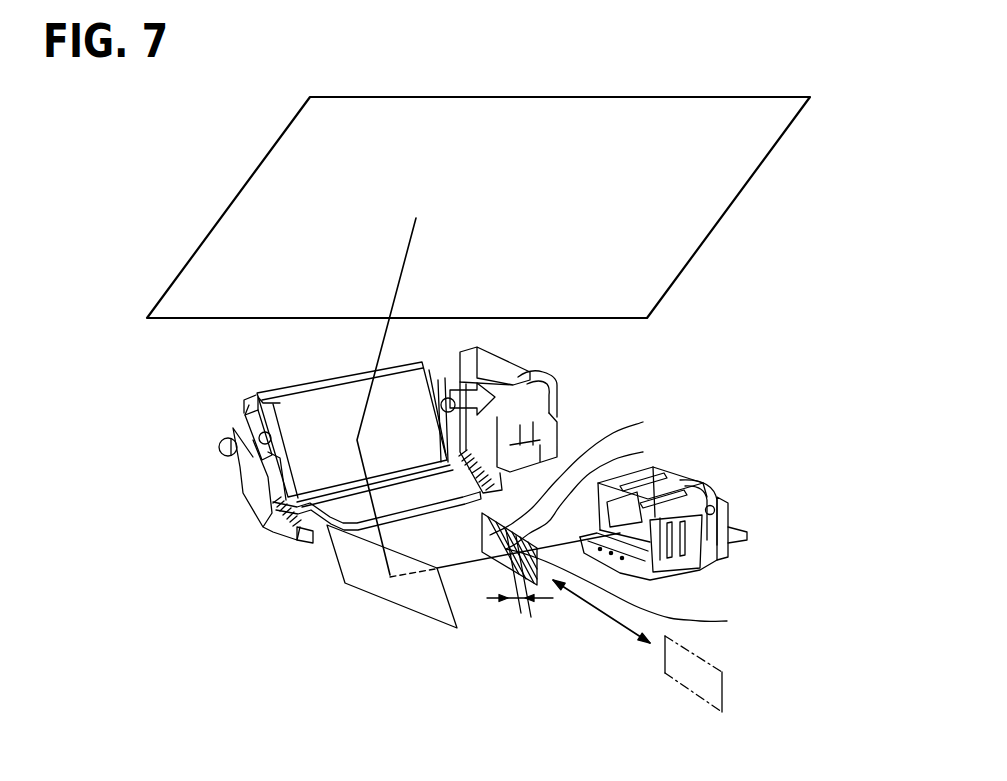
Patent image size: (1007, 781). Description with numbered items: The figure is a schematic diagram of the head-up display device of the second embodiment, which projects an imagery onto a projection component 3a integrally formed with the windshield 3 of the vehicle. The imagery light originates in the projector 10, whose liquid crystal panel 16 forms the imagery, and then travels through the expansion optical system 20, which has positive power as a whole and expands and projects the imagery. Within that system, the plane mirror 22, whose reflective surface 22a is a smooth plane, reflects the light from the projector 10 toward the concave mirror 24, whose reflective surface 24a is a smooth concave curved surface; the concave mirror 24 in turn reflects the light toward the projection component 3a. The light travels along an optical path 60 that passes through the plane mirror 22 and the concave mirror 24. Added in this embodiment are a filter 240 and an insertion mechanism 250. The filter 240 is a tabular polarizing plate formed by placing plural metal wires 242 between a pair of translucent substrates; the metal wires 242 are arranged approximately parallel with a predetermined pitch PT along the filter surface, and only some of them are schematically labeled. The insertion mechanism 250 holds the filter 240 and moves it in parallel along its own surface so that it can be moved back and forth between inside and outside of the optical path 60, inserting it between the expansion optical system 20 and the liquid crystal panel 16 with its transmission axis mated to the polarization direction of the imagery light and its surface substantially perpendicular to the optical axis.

The windshield 3 is at (472, 207).
The projection component 3a is at (265, 215).
The projector 10 is at (687, 516).
The liquid crystal panel 16 is at (640, 552).
The expansion optical system 20 is at (136, 493).
The plane mirror 22 is at (314, 615).
The reflective surface 22a is at (440, 605).
The concave mirror 24 is at (228, 491).
The reflective surface 24a is at (296, 394).
The optical path 60 is at (460, 562).
The predetermined pitch PT is at (527, 614).
The filter 240 is at (700, 658).
The metal wires 242 is at (608, 509).
The insertion mechanism 250 is at (600, 611).